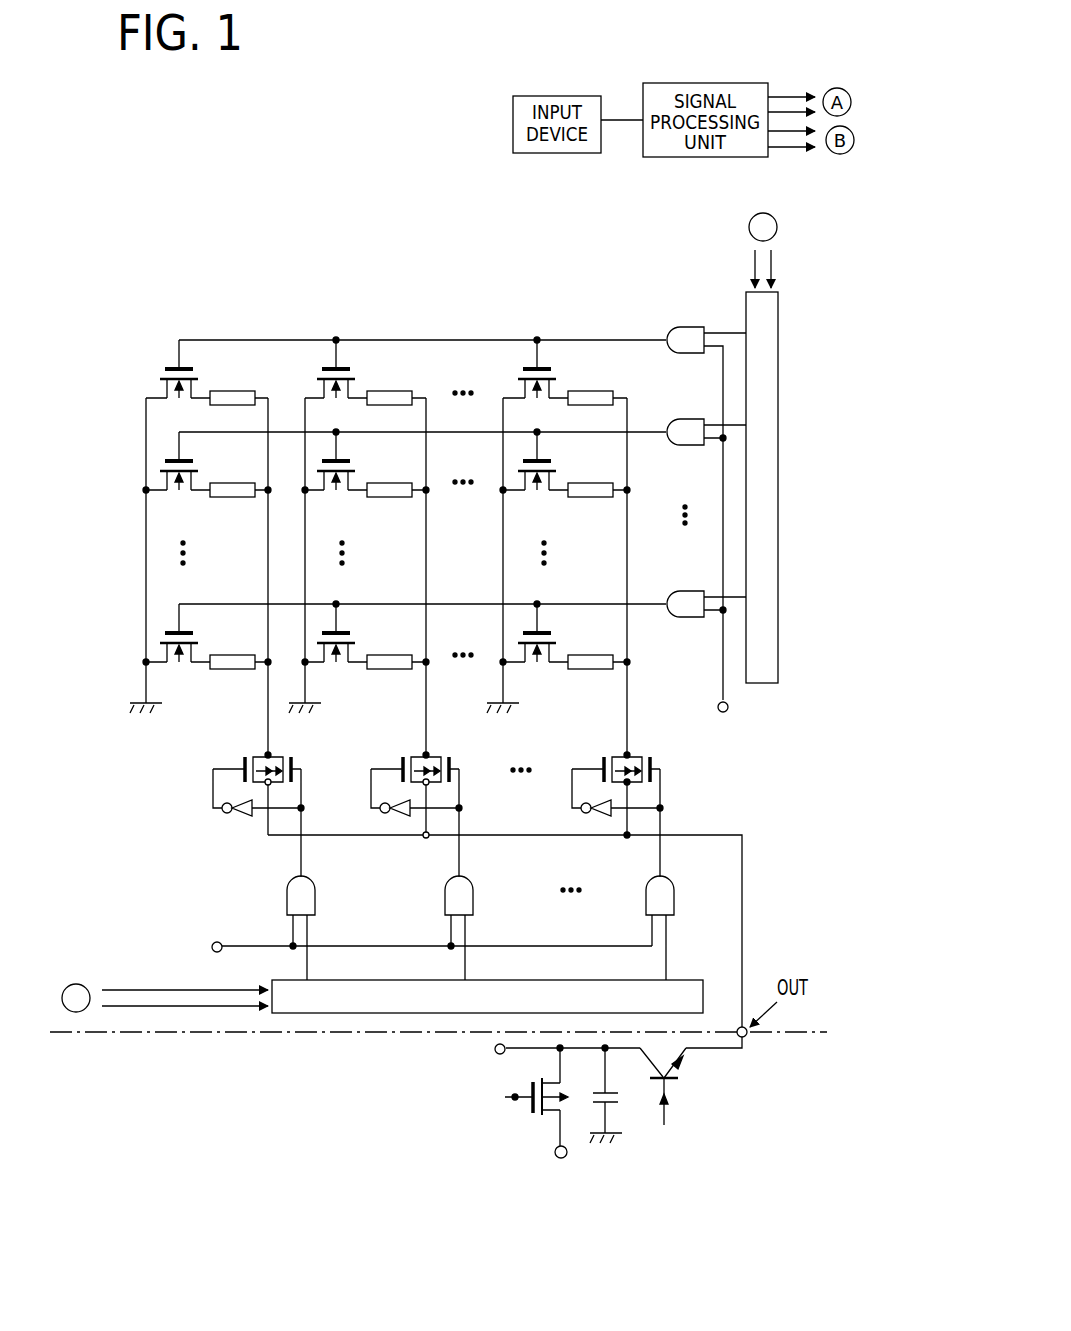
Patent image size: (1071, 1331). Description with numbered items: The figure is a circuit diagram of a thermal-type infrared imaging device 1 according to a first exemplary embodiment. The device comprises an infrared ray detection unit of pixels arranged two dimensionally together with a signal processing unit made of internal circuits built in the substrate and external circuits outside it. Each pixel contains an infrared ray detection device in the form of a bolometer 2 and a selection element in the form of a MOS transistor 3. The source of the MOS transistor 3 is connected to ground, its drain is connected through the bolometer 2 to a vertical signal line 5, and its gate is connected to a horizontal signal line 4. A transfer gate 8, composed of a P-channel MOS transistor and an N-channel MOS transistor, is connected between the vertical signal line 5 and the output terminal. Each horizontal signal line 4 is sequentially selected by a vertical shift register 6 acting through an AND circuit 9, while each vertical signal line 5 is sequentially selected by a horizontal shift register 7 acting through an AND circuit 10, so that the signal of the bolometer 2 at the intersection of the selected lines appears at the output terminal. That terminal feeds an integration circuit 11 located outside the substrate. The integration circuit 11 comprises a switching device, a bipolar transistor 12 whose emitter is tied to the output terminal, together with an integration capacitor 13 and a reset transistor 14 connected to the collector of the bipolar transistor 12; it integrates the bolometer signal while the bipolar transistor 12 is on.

The thermal-type infrared imaging device 1 is at (643, 210).
The bolometer 2 is at (397, 386).
The MOS transistor 3 is at (300, 363).
The horizontal signal line 4 is at (527, 318).
The vertical signal line 5 is at (263, 713).
The vertical shift register 6 is at (781, 337).
The horizontal shift register 7 is at (565, 978).
The transfer gate 8 is at (662, 762).
The AND circuit 9 is at (685, 323).
The AND circuit 10 is at (287, 902).
The integration circuit 11 is at (710, 1182).
The bipolar transistor 12 is at (683, 1074).
The integration capacitor 13 is at (680, 1147).
The reset transistor 14 is at (522, 1124).